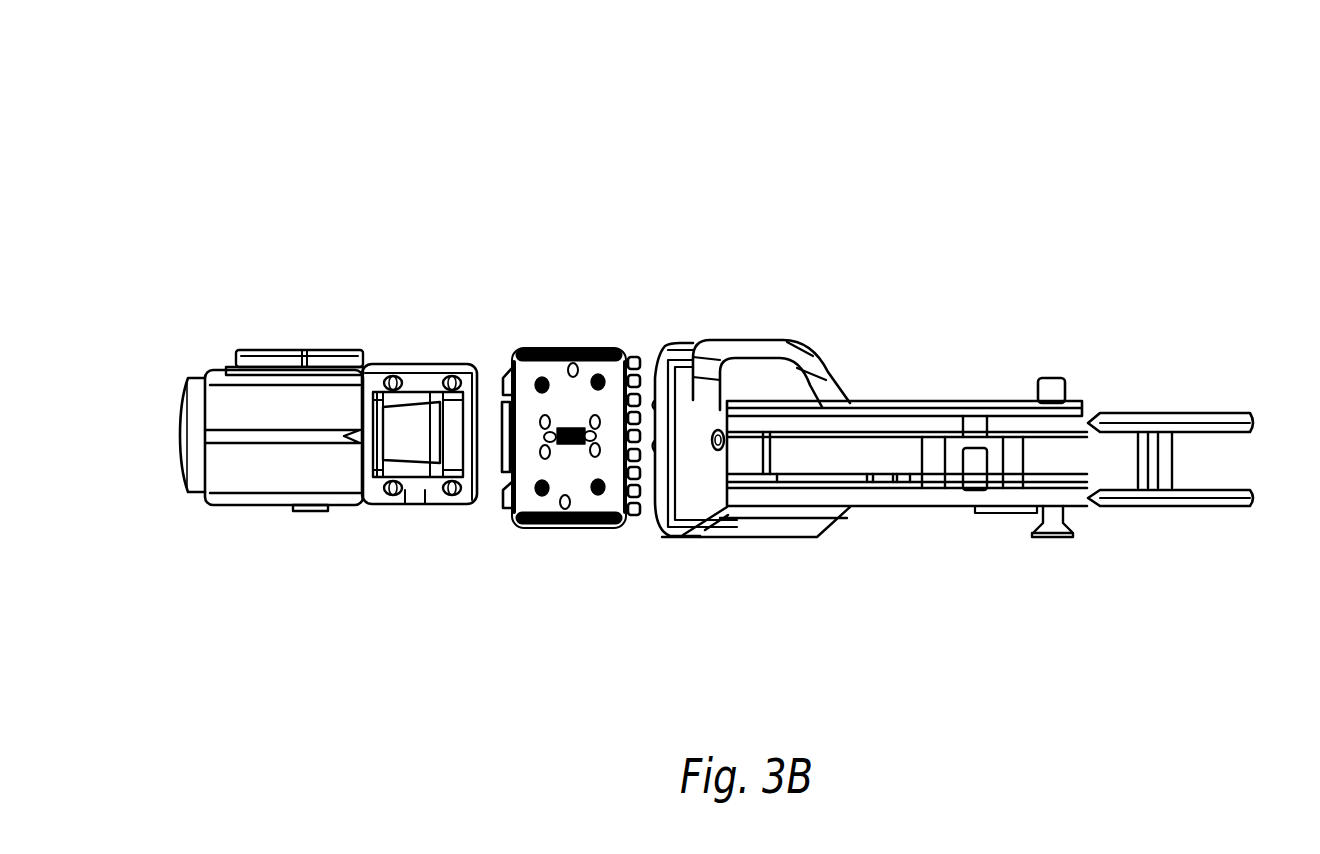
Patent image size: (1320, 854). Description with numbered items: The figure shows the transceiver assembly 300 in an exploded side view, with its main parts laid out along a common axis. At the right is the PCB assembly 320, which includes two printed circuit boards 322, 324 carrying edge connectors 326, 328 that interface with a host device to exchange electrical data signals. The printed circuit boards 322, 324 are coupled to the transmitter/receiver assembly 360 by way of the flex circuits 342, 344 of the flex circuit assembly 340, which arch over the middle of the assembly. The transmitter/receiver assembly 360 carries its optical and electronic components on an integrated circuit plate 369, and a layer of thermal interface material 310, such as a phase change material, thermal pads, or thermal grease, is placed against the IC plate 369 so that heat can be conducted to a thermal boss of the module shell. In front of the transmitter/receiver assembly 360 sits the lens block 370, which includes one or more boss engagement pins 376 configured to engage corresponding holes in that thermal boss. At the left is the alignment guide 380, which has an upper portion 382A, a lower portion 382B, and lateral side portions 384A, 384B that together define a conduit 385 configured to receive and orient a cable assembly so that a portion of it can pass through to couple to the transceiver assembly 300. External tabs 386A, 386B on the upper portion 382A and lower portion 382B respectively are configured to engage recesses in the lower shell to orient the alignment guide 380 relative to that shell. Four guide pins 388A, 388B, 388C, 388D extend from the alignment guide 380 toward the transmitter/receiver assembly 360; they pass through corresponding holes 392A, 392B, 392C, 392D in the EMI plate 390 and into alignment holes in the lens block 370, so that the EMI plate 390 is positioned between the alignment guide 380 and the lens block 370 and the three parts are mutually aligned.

The transceiver assembly 300 is at (1012, 136).
The thermal interface material 310 is at (773, 393).
The printed circuit board (PCB) assembly 320 is at (1005, 350).
The printed circuit board 322 is at (1082, 410).
The printed circuit board 324 is at (937, 508).
The edge connector 326 is at (1228, 410).
The edge connector 328 is at (1177, 502).
The flex circuit assembly 340 is at (848, 342).
The flex circuit 342 is at (714, 433).
The flex circuit 344 is at (717, 516).
The transmitter/receiver assembly 360 is at (780, 318).
The integrated circuit (IC) plate 369 is at (682, 512).
The lens block 370 is at (655, 530).
The boss engagement pin 376 is at (657, 375).
The alignment guide 380 is at (218, 208).
The upper portion 382A is at (425, 376).
The lower portion 382B is at (393, 506).
The lateral side portion 384A is at (483, 393).
The lateral side portion 384B is at (238, 482).
The conduit 385 is at (420, 432).
The tab 386A is at (283, 351).
The tab 386B is at (297, 521).
The guide pin 388A is at (470, 372).
The guide pin 388B is at (442, 500).
The guide pin 388C is at (385, 492).
The guide pin 388D is at (386, 380).
The EMI plate 390 is at (628, 280).
The hole 392A is at (610, 372).
The hole 392B is at (608, 500).
The hole 392C is at (530, 500).
The hole 392D is at (530, 372).